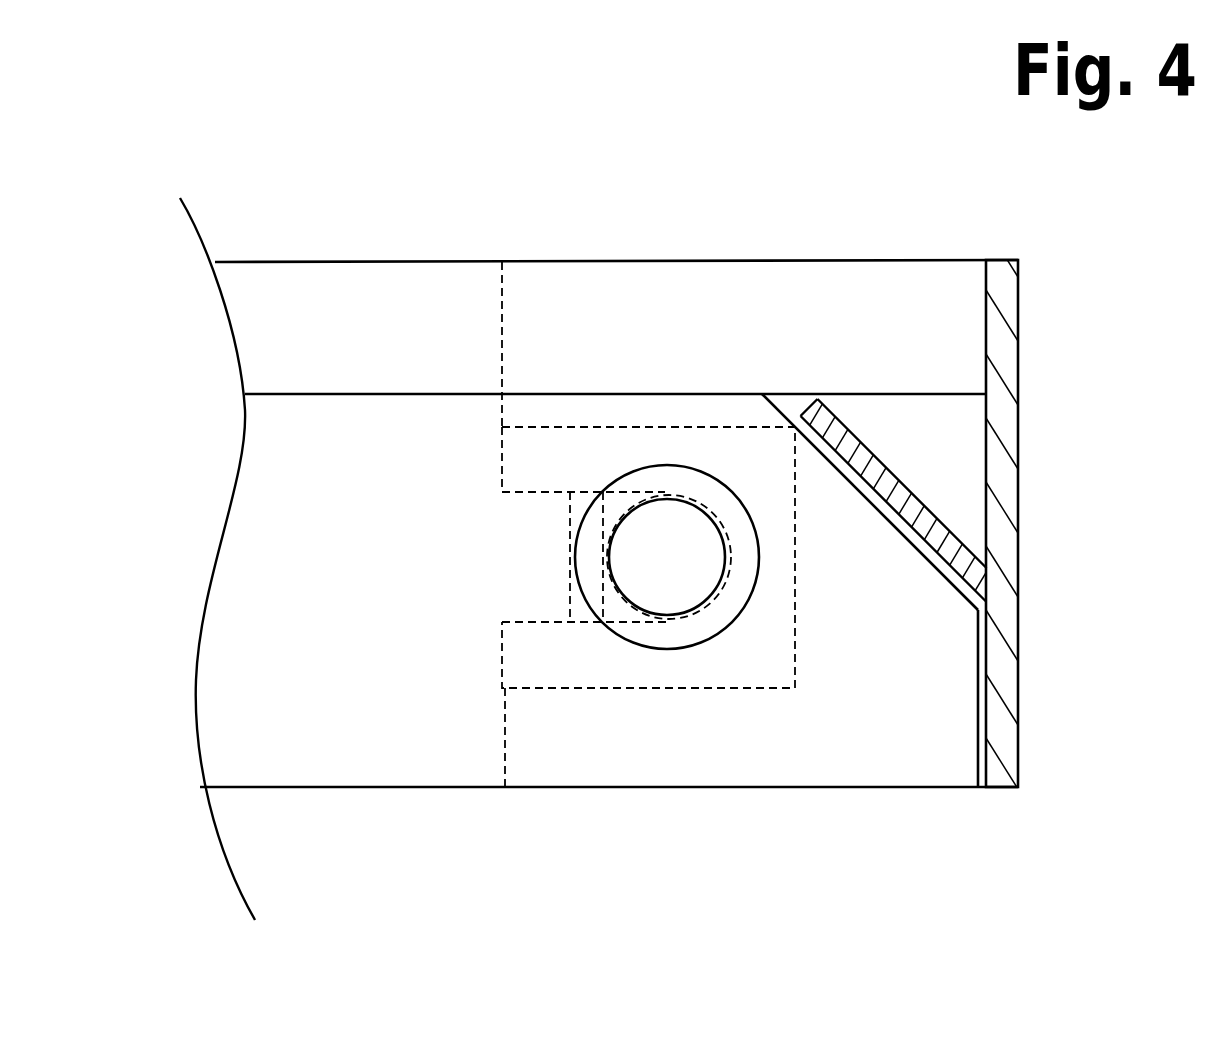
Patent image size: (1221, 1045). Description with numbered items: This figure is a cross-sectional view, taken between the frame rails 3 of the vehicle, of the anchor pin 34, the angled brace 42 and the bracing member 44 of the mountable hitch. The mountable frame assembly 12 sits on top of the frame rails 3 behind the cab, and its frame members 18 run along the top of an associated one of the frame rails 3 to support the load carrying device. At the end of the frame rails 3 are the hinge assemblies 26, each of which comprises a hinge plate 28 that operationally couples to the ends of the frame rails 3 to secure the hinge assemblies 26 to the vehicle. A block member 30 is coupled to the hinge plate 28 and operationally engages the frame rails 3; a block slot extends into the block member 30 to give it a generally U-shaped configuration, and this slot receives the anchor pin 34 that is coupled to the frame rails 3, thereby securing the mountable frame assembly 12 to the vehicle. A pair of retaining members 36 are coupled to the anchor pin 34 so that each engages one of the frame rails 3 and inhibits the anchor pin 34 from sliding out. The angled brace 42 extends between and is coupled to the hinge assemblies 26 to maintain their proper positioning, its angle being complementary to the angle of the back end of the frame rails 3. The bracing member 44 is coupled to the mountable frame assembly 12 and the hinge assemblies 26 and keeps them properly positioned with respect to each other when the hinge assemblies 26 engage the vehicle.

The frame rails 3 is at (327, 718).
The mountable frame assembly 12 is at (503, 215).
The frame members 18 is at (293, 327).
The hinge assemblies 26 is at (997, 539).
The hinge plate 28 is at (502, 350).
The block member 30 is at (795, 643).
The anchor pin 34 is at (670, 587).
The retaining members 36 is at (662, 473).
The angled brace 42 is at (893, 482).
The bracing member 44 is at (1002, 573).